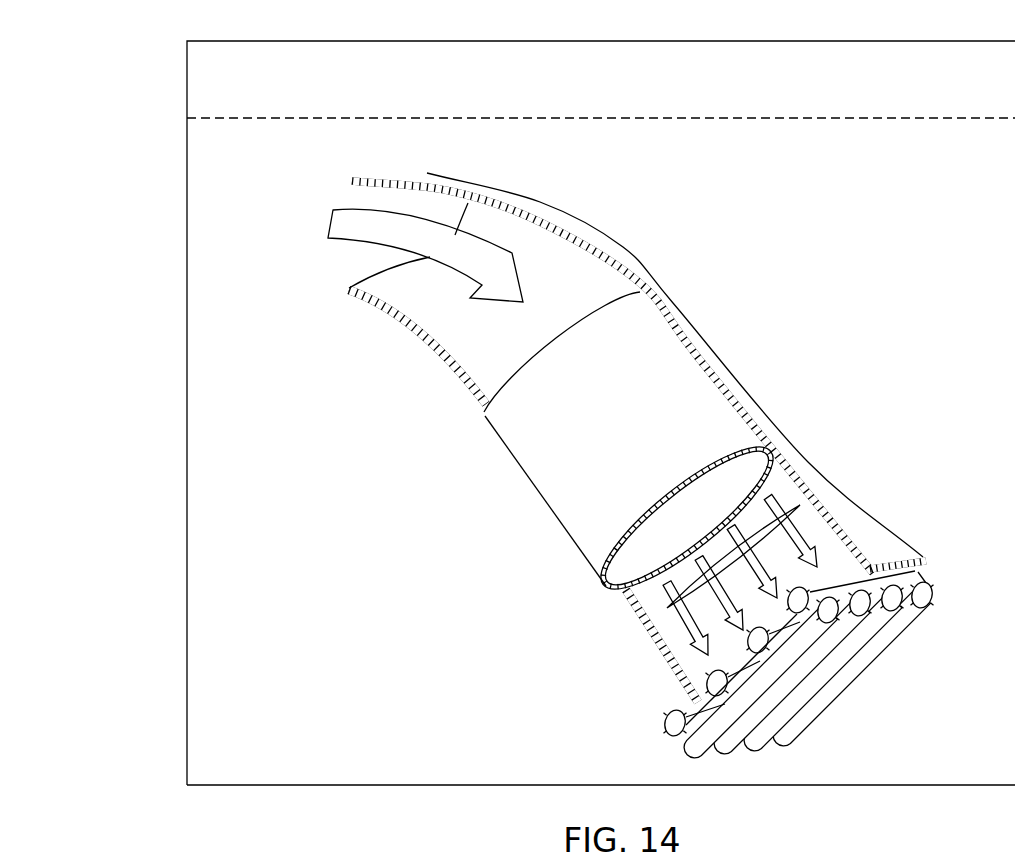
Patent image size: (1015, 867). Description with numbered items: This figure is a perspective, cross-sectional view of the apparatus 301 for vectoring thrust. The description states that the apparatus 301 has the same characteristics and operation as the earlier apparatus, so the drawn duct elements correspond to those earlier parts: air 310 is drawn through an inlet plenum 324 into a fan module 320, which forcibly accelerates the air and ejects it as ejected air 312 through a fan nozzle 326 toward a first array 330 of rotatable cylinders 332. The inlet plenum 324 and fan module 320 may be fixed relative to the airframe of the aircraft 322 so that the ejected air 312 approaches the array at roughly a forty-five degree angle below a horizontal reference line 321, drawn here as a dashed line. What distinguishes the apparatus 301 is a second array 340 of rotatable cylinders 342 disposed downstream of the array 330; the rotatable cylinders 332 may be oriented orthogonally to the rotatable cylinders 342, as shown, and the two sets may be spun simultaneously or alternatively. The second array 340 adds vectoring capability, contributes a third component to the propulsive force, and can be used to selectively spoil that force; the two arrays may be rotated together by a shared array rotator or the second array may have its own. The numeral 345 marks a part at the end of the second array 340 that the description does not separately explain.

The apparatus 301 is at (752, 254).
The air flow 310 is at (340, 226).
The duct wall 312 is at (806, 495).
The inlet duct 320 is at (535, 495).
The ceiling plane 321 is at (936, 118).
The room space 322 is at (318, 613).
The outer duct surface 324 is at (585, 220).
The top plate 326 is at (841, 508).
The array 330 is at (773, 641).
The rotatable cylinders 332 is at (822, 625).
The second array 340 is at (907, 579).
The rotatable cylinders 342 is at (704, 758).
The end nozzle 345 is at (930, 608).